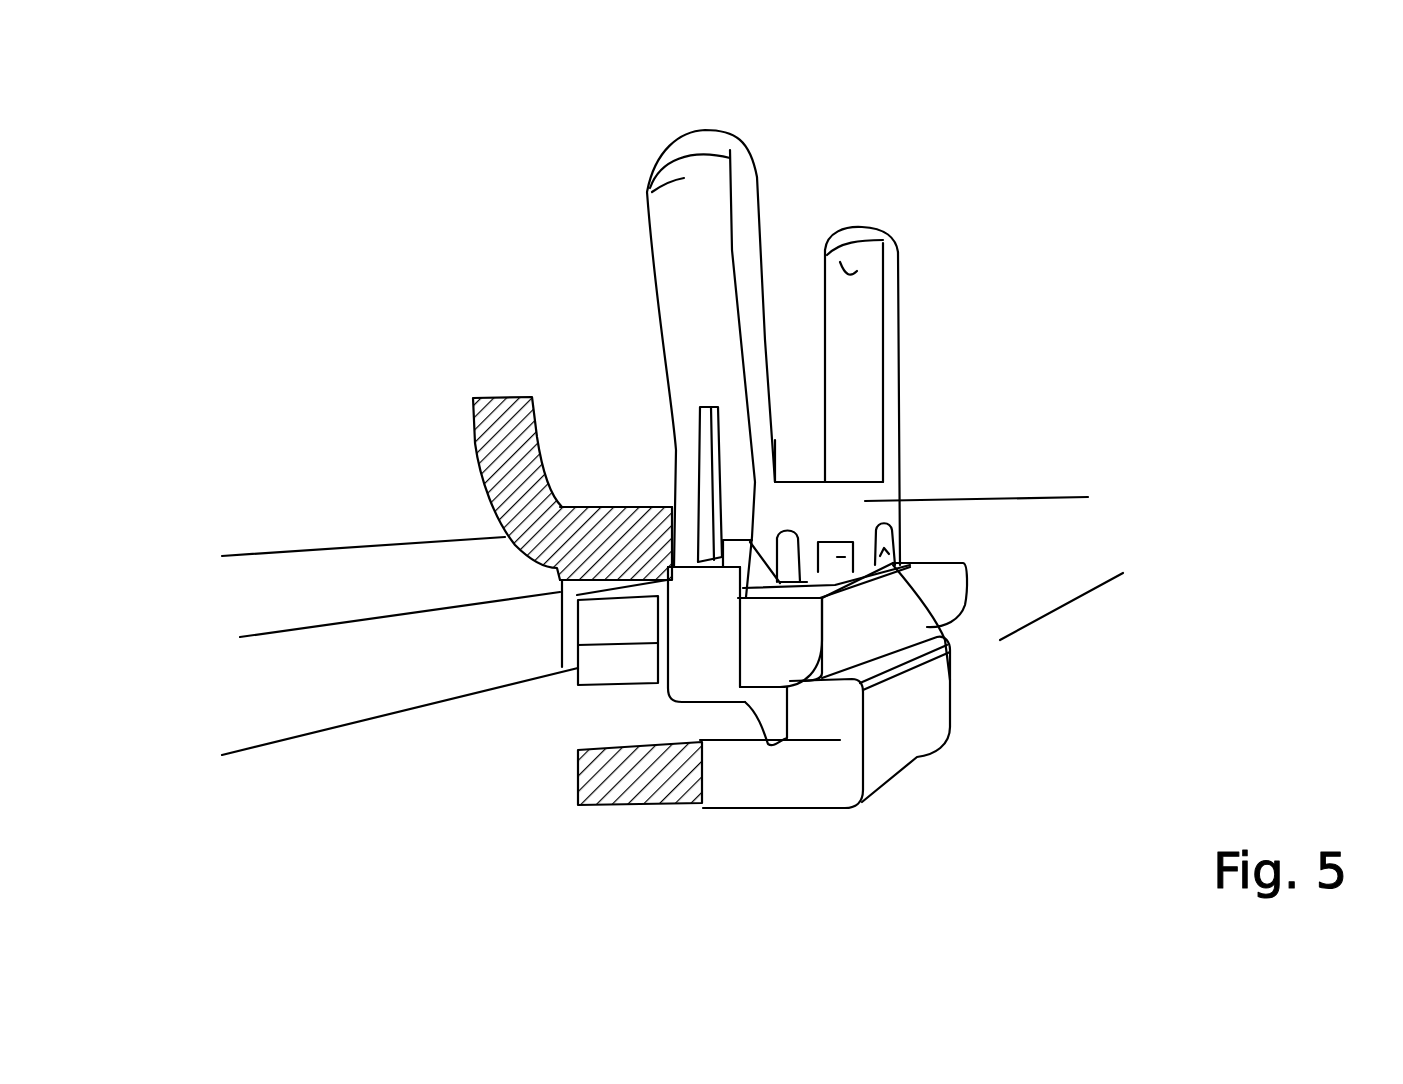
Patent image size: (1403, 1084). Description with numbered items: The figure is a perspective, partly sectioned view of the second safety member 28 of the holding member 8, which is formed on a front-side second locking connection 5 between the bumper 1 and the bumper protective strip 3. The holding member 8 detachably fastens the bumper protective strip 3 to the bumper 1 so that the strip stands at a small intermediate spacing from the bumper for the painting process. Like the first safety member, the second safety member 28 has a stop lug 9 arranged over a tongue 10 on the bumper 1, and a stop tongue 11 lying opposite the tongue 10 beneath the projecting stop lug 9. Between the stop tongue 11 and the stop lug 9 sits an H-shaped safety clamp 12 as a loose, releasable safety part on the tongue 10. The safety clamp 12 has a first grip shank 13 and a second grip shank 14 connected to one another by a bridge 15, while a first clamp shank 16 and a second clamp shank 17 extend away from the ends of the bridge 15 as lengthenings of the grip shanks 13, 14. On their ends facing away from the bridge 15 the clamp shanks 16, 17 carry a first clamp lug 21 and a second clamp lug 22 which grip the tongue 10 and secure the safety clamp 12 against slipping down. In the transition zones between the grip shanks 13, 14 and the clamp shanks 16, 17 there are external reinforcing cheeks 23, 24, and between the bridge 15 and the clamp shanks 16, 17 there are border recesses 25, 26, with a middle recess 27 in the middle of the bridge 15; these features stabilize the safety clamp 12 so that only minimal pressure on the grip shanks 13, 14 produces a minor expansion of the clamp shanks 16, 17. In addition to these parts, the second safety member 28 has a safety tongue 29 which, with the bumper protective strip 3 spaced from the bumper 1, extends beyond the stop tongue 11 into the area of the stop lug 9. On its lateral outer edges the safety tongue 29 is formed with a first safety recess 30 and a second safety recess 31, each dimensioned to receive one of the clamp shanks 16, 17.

The bumper 1 is at (503, 437).
The bumper protective strip 3 is at (295, 687).
The front-side second locking connection 5 is at (545, 628).
The holding member 8 is at (1083, 333).
The stop lug 9 is at (908, 718).
The tongue 10 is at (752, 780).
The stop tongue 11 is at (592, 510).
The safety clamp 12 is at (935, 250).
The first grip shank 13 is at (648, 192).
The second grip shank 14 is at (855, 270).
The bridge 15 is at (860, 510).
The first clamp shank 16 is at (688, 648).
The second clamp shank 17 is at (985, 565).
The first clamp lug 21 is at (775, 710).
The second clamp lug 22 is at (965, 688).
The reinforcing cheek 23 is at (707, 473).
The reinforcing cheek 24 is at (918, 477).
The border recess 25 is at (800, 528).
The border recess 26 is at (950, 658).
The middle recess 27 is at (853, 542).
The second safety member 28 is at (1007, 597).
The safety tongue 29 is at (892, 627).
The first safety recess 30 is at (633, 652).
The second safety recess 31 is at (925, 548).